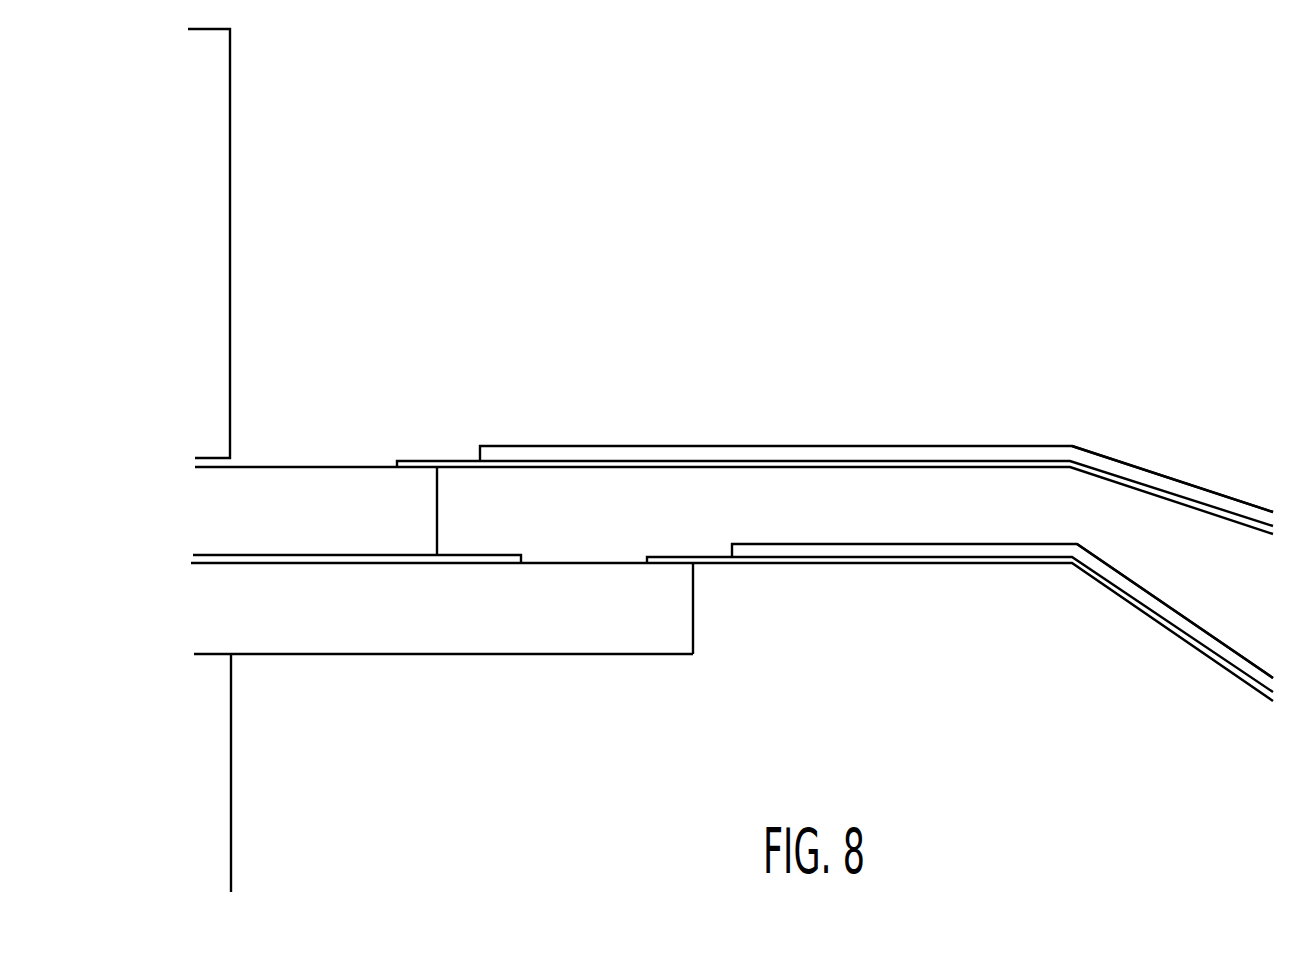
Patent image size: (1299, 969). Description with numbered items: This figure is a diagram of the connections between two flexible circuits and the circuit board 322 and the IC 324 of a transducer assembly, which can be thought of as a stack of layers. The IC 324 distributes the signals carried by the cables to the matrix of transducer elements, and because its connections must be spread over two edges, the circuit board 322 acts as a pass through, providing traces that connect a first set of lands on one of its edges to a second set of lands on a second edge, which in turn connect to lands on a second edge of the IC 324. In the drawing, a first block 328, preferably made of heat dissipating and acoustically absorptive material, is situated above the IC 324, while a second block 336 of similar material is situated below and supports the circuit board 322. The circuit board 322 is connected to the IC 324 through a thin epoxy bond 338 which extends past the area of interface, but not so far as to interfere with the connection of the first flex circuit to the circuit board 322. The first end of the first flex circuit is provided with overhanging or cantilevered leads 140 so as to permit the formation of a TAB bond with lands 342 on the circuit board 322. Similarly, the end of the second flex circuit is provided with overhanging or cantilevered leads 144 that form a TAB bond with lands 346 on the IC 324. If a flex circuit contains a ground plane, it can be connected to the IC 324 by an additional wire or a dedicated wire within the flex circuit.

The first block 328 is at (185, 181).
The second block 336 is at (217, 790).
The IC 324 is at (328, 524).
The circuit board 322 is at (453, 621).
The cantilevered leads 140 is at (712, 564).
The cantilevered leads 144 is at (443, 463).
The lands 346 is at (396, 463).
The thin epoxy bond 338 is at (521, 559).
The lands 342 is at (645, 557).